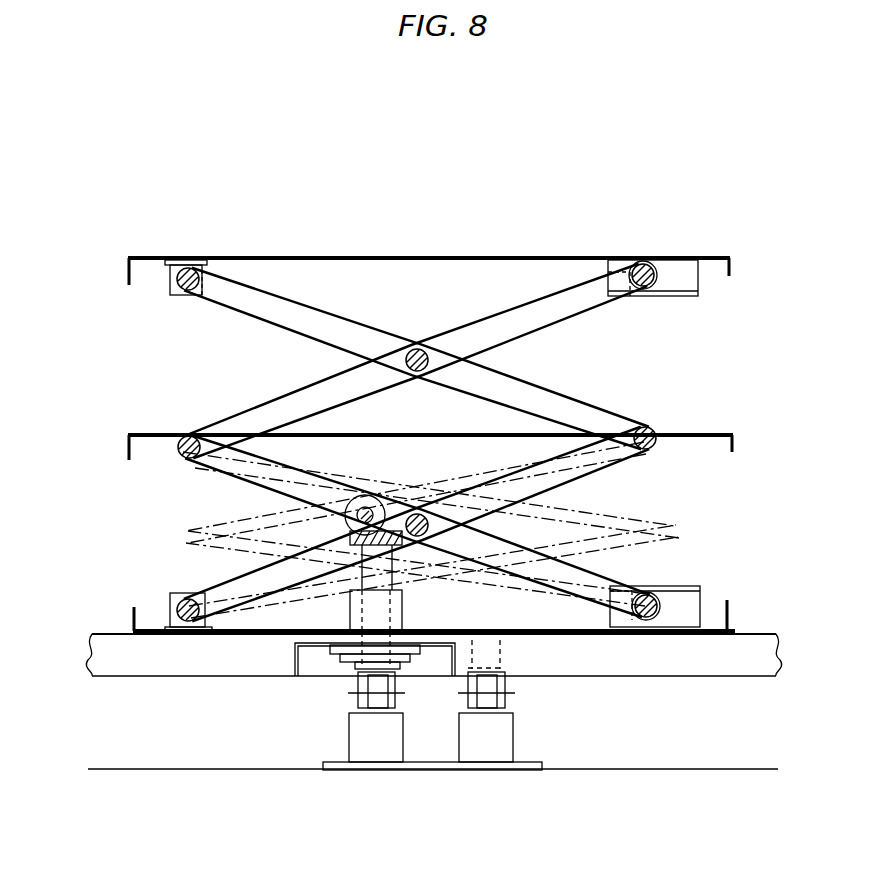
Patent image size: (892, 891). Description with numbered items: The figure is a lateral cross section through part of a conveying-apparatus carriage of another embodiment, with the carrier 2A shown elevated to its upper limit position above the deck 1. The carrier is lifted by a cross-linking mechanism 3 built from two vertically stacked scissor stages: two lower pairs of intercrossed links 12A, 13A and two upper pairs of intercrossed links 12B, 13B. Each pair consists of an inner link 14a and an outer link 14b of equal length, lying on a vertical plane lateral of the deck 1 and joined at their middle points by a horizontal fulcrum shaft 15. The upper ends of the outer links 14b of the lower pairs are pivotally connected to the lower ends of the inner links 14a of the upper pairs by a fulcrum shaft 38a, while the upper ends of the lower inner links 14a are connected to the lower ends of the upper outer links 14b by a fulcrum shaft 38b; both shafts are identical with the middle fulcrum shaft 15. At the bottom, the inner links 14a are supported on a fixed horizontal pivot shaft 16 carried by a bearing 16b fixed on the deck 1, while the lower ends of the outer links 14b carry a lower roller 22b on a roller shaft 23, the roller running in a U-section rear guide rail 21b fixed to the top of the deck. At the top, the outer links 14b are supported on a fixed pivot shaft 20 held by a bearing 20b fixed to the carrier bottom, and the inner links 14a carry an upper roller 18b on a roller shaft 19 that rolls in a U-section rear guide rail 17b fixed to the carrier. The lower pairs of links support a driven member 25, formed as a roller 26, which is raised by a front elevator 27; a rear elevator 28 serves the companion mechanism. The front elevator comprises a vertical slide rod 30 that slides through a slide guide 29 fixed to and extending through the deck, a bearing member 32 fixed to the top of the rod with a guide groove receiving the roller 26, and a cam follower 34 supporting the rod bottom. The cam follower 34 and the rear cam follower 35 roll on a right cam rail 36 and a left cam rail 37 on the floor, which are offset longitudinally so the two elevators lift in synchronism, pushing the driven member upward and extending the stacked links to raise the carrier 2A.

The deck 1 is at (150, 660).
The carrier 2A is at (470, 255).
The cross-linking mechanism 3 is at (558, 290).
The lower pair of intercrossed links 12A is at (526, 558).
The upper pair of intercrossed links 12B is at (431, 331).
The lower pair of intercrossed links 13A is at (600, 572).
The upper pair of intercrossed links 13B is at (342, 320).
The inner link 14a is at (490, 330).
The outer link 14b is at (305, 315).
The fulcrum shaft 15 is at (412, 347).
The pivot shaft 16 is at (188, 622).
The bearing 16b is at (168, 600).
The rear guide rail 17b is at (699, 263).
The upper roller 18b is at (680, 268).
The roller shaft 19 is at (640, 264).
The pivot shaft 20 is at (188, 267).
The bearing 20b is at (172, 290).
The rear guide rail 21b is at (700, 636).
The lower roller 22b is at (680, 586).
The roller shaft 23 is at (648, 620).
The driven member 25 is at (268, 450).
The roller 26 is at (348, 500).
The front elevator 27 is at (348, 700).
The rear elevator 28 is at (520, 695).
The slide guide 29 is at (400, 615).
The slide rod 30 is at (345, 528).
The bearing member 32 is at (394, 526).
The cam follower 34 is at (377, 703).
The cam follower 35 is at (485, 700).
The right cam rail 36 is at (368, 748).
The left cam rail 37 is at (492, 742).
The fulcrum shaft 38a is at (130, 452).
The fulcrum shaft 38b is at (735, 435).